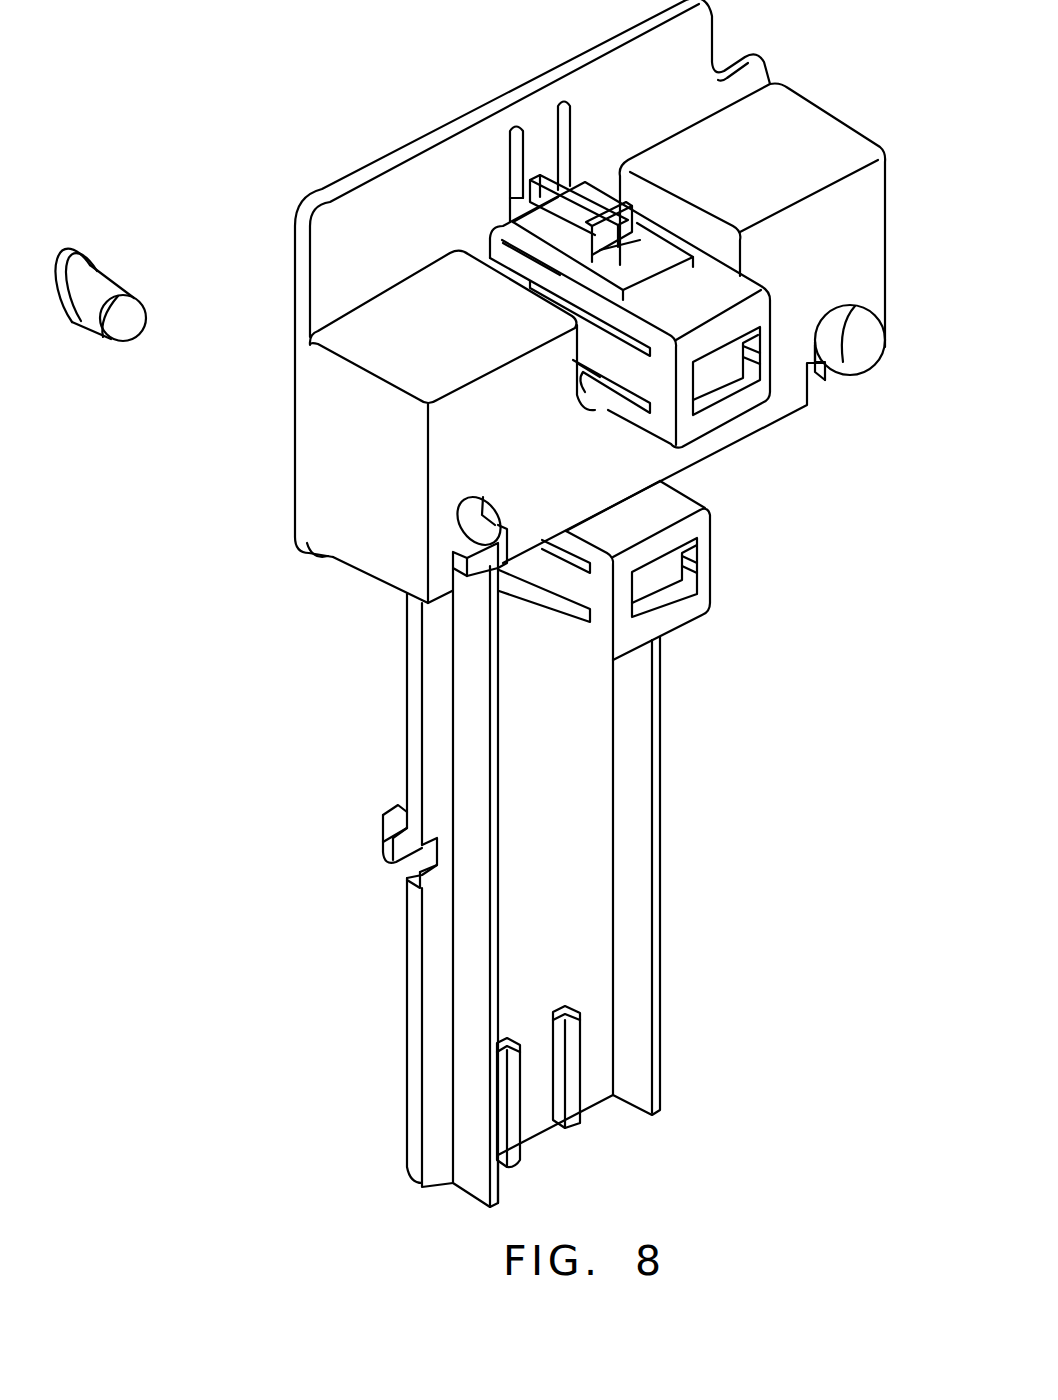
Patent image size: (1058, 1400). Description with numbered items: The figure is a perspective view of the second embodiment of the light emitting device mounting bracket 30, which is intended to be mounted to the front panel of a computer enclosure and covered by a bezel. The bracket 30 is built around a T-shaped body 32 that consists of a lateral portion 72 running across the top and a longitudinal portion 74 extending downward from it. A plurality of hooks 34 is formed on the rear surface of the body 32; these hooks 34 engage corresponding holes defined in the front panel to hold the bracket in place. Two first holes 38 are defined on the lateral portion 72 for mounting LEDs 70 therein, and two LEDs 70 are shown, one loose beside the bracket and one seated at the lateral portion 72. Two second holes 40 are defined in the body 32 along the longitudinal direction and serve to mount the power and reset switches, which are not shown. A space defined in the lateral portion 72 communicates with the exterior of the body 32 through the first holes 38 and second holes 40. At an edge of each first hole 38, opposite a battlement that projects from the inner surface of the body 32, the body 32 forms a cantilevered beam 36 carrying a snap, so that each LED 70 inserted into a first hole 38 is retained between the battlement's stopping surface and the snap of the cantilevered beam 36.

The bracket 30 is at (432, 121).
The T-shaped body 32 is at (568, 775).
The hooks 34 is at (388, 842).
The cantilevered beam 36 is at (483, 550).
The first holes 38 is at (480, 510).
The second holes 40 is at (733, 386).
The LEDs 70 is at (123, 277).
The lateral portion 72 is at (342, 467).
The longitudinal portion 74 is at (560, 933).